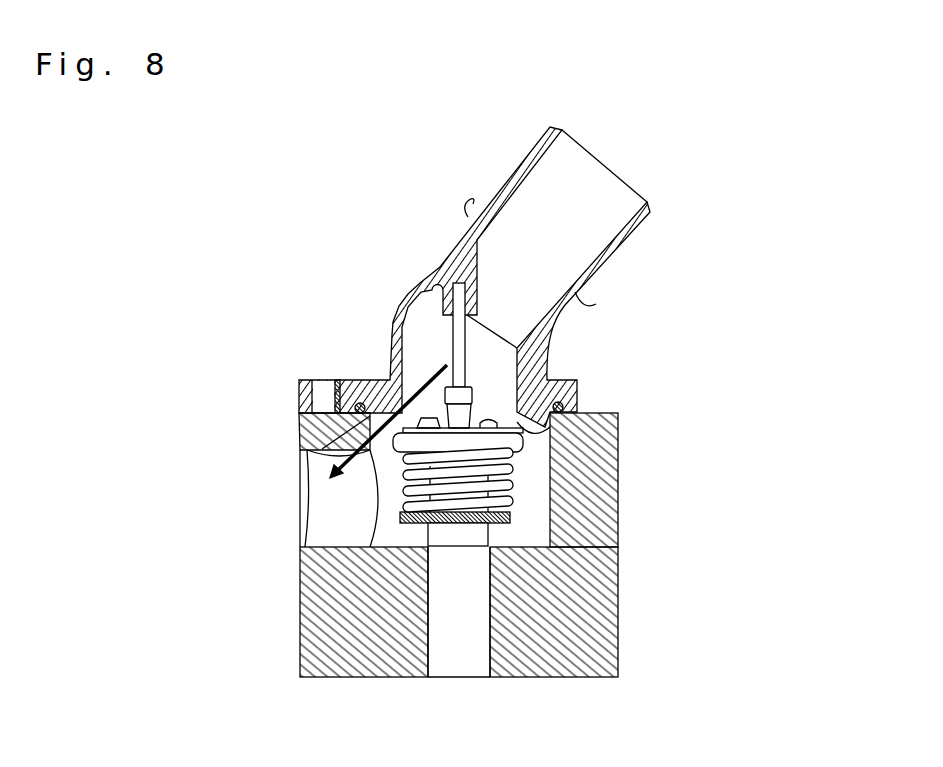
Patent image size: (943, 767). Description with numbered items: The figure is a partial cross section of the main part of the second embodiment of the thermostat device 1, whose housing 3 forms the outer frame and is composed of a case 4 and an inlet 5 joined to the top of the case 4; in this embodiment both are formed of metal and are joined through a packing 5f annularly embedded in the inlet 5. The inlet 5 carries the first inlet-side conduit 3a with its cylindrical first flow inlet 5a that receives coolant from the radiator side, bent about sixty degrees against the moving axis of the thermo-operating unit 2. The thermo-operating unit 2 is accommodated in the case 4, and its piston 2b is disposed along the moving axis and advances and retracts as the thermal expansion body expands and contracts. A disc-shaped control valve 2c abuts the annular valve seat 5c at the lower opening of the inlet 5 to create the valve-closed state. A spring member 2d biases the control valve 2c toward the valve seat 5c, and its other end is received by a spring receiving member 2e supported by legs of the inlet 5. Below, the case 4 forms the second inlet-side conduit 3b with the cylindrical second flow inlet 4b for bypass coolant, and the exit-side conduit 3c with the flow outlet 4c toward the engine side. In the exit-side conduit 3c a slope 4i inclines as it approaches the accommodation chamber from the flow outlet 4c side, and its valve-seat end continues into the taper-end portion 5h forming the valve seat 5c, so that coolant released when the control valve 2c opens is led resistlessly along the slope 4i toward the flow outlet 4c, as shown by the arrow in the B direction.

The thermostat device 1 is at (503, 424).
The thermo-operating unit 2 is at (490, 414).
The piston 2b is at (452, 340).
The control valve 2c is at (500, 432).
The spring member 2d is at (510, 463).
The spring receiving member 2e is at (498, 545).
The housing 3 is at (473, 424).
The first inlet-side conduit 3a is at (585, 148).
The second inlet-side conduit 3b is at (445, 678).
The exit-side conduit 3c is at (307, 500).
The case 4 is at (458, 545).
The second flow inlet 4b is at (463, 662).
The flow outlet 4c is at (307, 530).
The slope 4i is at (307, 460).
The inlet 5 is at (474, 277).
The first flow inlet 5a is at (603, 178).
The valve seat 5c is at (540, 430).
The packing 5f is at (577, 403).
The taper-end portion 5h is at (383, 403).
The B direction B is at (380, 431).